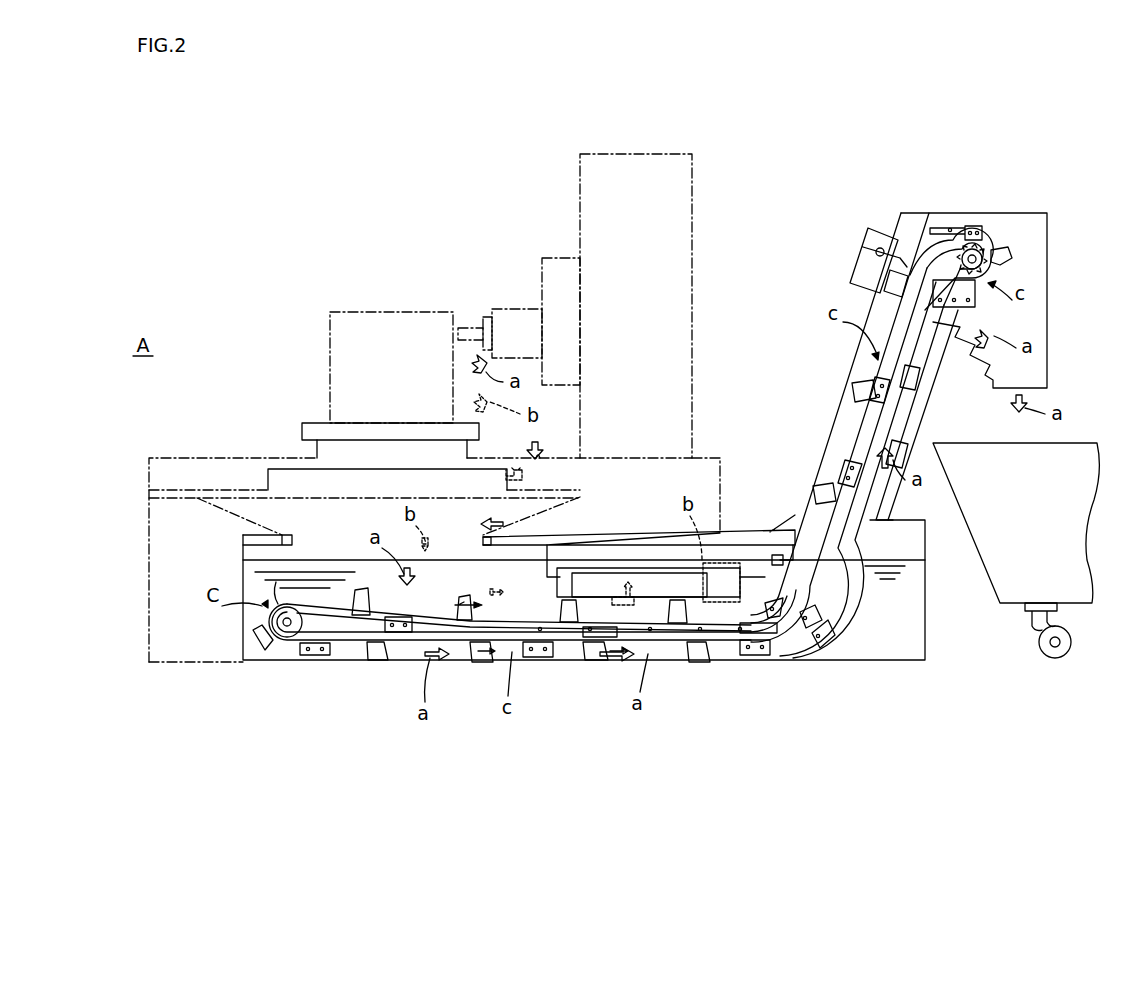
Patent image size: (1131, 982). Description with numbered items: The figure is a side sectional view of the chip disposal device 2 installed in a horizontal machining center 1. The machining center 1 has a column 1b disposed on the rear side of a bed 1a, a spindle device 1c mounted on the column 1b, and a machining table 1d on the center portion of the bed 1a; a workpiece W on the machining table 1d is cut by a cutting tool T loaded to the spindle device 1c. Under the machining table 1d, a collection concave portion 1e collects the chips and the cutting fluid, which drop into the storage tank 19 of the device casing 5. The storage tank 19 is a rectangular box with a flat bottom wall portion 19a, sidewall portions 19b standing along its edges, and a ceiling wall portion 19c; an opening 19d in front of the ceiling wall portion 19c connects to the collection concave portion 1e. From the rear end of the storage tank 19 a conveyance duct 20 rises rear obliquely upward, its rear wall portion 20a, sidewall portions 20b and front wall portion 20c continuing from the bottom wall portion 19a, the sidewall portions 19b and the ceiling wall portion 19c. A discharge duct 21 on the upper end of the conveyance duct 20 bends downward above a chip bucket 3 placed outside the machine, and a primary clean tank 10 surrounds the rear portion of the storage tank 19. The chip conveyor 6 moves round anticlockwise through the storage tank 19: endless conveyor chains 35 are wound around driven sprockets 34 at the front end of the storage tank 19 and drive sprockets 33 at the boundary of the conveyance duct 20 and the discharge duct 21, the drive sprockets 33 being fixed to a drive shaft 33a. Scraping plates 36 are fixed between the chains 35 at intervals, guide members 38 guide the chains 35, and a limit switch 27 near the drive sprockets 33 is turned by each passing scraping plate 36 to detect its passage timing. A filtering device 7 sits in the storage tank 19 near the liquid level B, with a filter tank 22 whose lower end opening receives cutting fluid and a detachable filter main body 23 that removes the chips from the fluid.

The horizontal machining center 1 is at (456, 369).
The bed 1a is at (189, 457).
The column 1b is at (580, 178).
The spindle device 1c is at (512, 308).
The machining table 1d is at (318, 423).
The collection concave portion 1e is at (292, 540).
The chip disposal device 2 is at (800, 283).
The chip bucket 3 is at (1085, 443).
The device casing 5 is at (795, 447).
The chip conveyor 6 is at (635, 505).
The filtering device 7 is at (780, 535).
The primary clean tank 10 is at (930, 628).
The storage tank 19 is at (616, 541).
The bottom wall portion 19a is at (355, 650).
The sidewall portions 19b is at (240, 640).
The ceiling wall portion 19c is at (615, 532).
The opening 19d is at (487, 537).
The conveyance duct 20 is at (872, 435).
The rear wall portion 20a is at (912, 420).
The sidewall portions 20b is at (915, 370).
The front wall portion 20c is at (857, 370).
The discharge duct 21 is at (1047, 300).
The filter tank 22 is at (540, 571).
The filter main body 23 is at (560, 582).
The limit switch 27 is at (868, 228).
The drive sprockets 33 is at (960, 234).
The drive shaft 33a is at (980, 250).
The driven sprockets 34 is at (296, 632).
The conveyor chains 35 is at (406, 632).
The scraping plates 36 is at (470, 650).
The guide members 38 is at (318, 655).
The liquid level B is at (270, 558).
The cutting tool T is at (471, 326).
The workpiece W is at (360, 312).